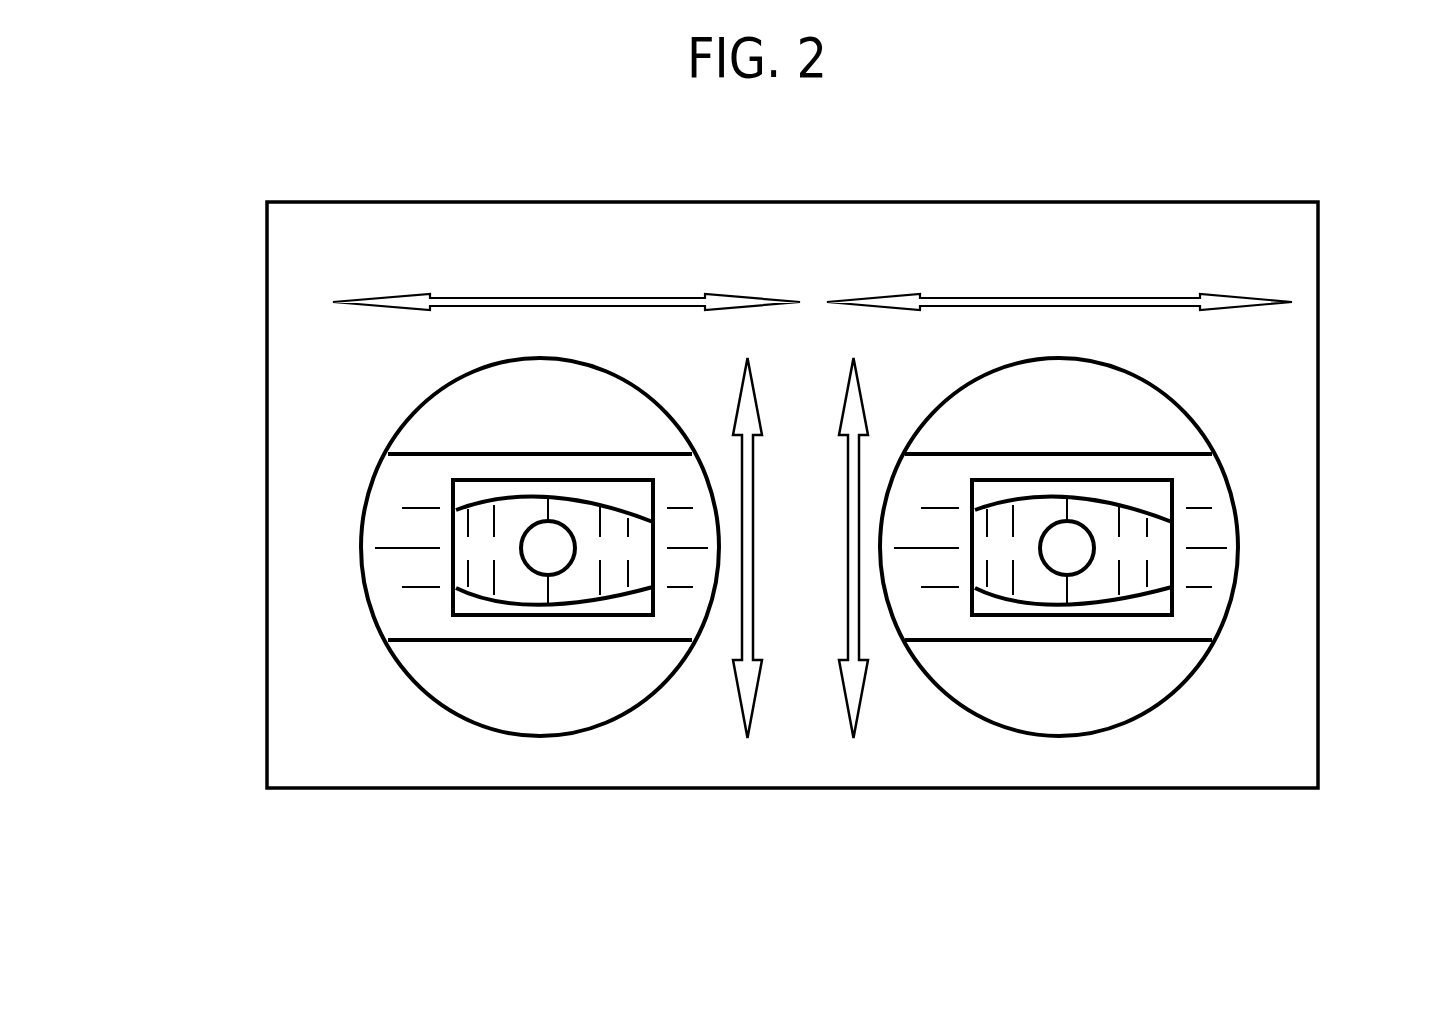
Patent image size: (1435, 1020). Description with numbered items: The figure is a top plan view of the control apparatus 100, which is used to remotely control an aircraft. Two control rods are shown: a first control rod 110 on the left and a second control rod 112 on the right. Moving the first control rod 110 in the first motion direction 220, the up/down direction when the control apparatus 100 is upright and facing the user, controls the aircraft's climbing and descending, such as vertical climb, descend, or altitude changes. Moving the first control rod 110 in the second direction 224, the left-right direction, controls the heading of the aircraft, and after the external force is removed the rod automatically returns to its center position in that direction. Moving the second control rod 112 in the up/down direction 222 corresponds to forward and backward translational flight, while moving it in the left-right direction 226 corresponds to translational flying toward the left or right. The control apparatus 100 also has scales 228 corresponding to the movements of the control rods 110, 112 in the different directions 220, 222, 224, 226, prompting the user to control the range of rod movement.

The control apparatus 100 is at (203, 129).
The first control rod 110 is at (533, 548).
The second control rod 112 is at (1082, 549).
The first motion direction 220 is at (744, 440).
The up/down direction 222 is at (858, 441).
The second direction 224 is at (535, 293).
The left-right direction 226 is at (1053, 295).
The scales 228 is at (375, 532).